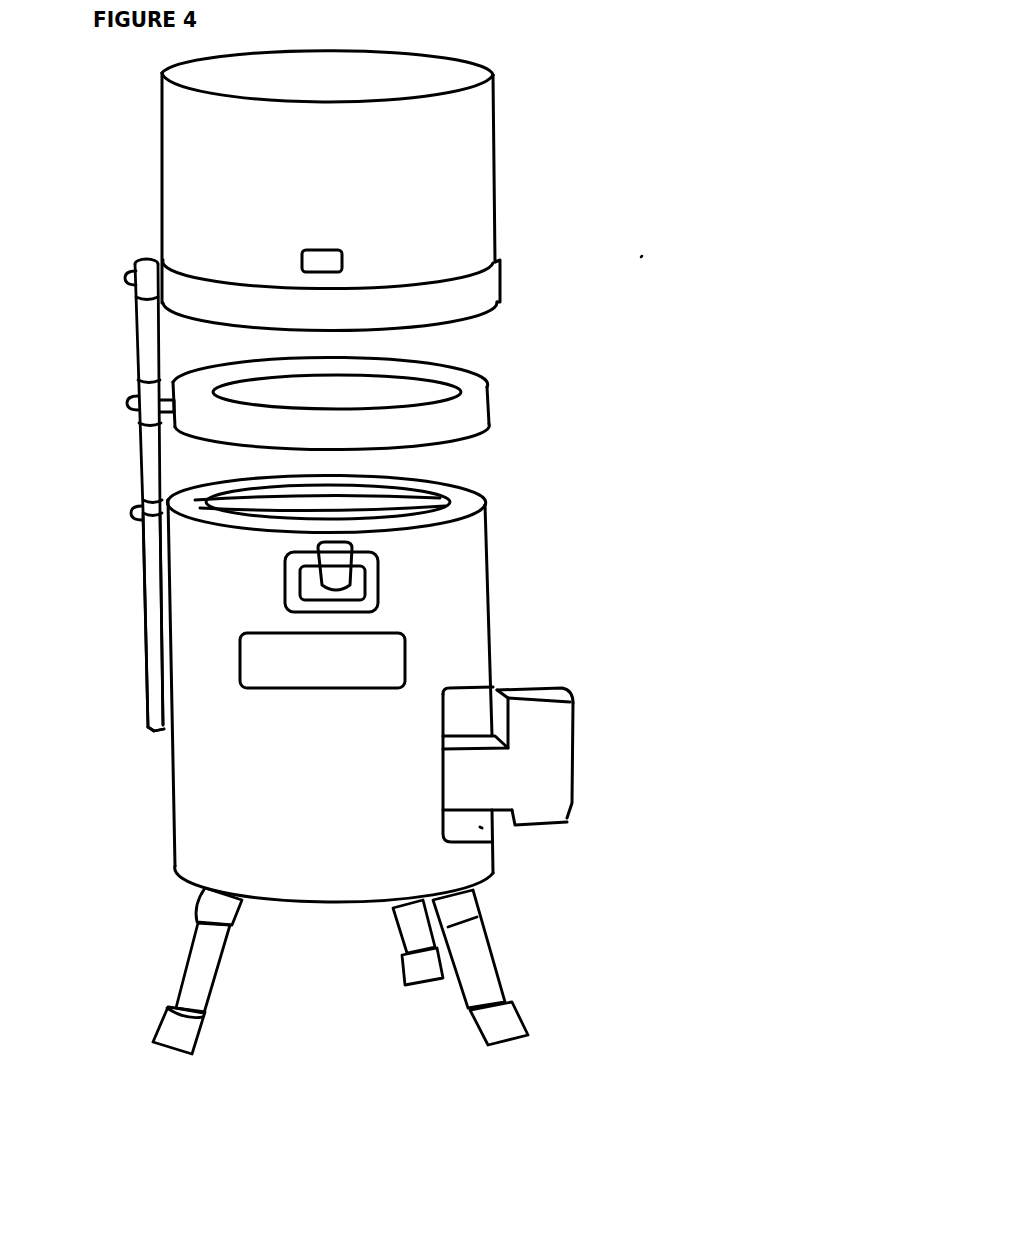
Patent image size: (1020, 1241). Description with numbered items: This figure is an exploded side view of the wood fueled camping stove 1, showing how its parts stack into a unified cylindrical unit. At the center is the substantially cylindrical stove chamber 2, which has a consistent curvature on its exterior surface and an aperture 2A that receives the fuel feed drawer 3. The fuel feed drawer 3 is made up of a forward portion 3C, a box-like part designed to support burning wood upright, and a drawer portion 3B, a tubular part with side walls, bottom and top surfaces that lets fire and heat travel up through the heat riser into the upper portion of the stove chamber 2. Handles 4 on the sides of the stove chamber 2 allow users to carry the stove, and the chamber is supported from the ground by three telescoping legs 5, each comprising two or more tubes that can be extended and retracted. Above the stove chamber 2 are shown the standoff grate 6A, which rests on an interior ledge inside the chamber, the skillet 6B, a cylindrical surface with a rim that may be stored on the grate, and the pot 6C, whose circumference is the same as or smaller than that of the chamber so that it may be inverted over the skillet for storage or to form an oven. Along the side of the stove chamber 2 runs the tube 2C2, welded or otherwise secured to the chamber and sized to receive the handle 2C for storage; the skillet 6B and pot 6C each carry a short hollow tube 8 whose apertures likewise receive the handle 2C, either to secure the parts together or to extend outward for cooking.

The wood fueled camping stove 1 is at (641, 257).
The stove chamber 2 is at (472, 615).
The aperture 2A is at (480, 827).
The handle 2C is at (143, 253).
The tube 2C2 is at (160, 627).
The fuel feed drawer 3 is at (572, 752).
The drawer portion 3B is at (470, 787).
The forward portion 3C is at (542, 798).
The handles 4 is at (390, 660).
The telescoping legs 5 is at (173, 1047).
The standoff grate 6A is at (455, 503).
The skillet 6B is at (498, 396).
The pot 6C is at (500, 193).
The hollow tube 8 is at (130, 497).